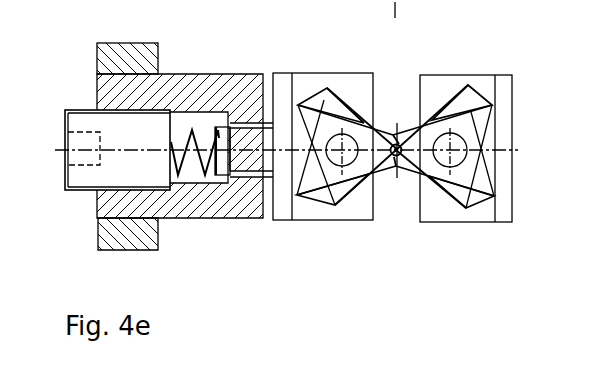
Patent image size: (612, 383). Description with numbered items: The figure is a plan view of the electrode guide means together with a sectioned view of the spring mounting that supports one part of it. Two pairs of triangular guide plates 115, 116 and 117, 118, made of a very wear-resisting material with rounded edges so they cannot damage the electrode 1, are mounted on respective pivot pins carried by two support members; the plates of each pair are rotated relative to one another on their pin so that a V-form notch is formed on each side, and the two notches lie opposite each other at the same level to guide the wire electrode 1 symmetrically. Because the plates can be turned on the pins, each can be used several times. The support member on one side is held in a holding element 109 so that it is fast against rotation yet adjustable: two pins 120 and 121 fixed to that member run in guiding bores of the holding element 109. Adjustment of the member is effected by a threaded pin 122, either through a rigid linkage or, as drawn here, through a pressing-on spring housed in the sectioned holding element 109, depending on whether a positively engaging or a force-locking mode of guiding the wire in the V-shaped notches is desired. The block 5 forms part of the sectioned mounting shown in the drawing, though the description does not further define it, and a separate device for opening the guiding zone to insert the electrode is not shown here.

The housing block 5 is at (118, 63).
The holding element 109 is at (212, 92).
The pin 121 is at (223, 127).
The pin 120 is at (223, 127).
The threaded pin 122 is at (82, 175).
The triangular guide plate 117 is at (330, 110).
The triangular guide plate 118 is at (333, 193).
The triangular guide plate 116 is at (463, 108).
The triangular guide plate 115 is at (462, 184).
The electrode 1 is at (396, 128).